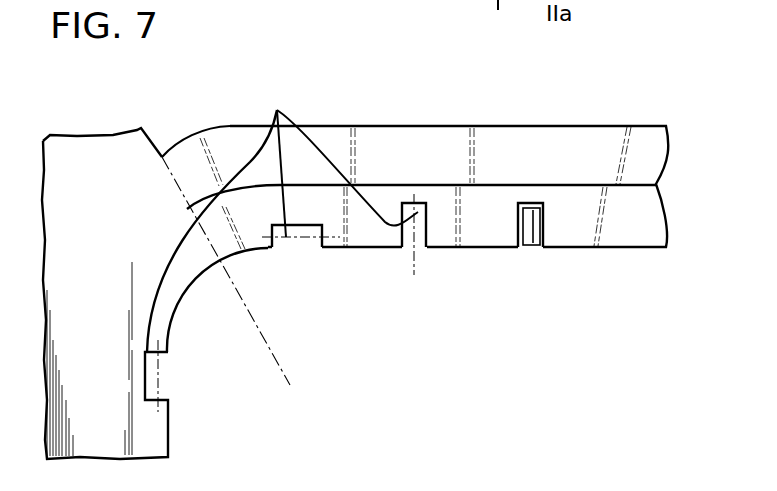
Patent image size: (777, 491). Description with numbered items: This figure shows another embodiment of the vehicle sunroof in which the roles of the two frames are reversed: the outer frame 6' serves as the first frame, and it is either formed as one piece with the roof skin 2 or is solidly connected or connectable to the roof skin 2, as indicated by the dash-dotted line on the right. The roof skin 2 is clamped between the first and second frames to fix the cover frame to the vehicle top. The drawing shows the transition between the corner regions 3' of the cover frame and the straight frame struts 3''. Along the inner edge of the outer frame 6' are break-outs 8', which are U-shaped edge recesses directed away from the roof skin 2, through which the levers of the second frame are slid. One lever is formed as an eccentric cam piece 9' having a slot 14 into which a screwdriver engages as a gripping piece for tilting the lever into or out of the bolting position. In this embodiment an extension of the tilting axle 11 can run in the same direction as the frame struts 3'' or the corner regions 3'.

The roof skin 2 is at (103, 389).
The corner regions 3' is at (183, 269).
The frame struts 3'' is at (449, 162).
The outer frame 6' is at (448, 132).
The break-outs 8' is at (353, 284).
The eccentric cam piece 9' is at (542, 160).
The tilting axle 11 is at (282, 217).
The slot 14 is at (533, 246).